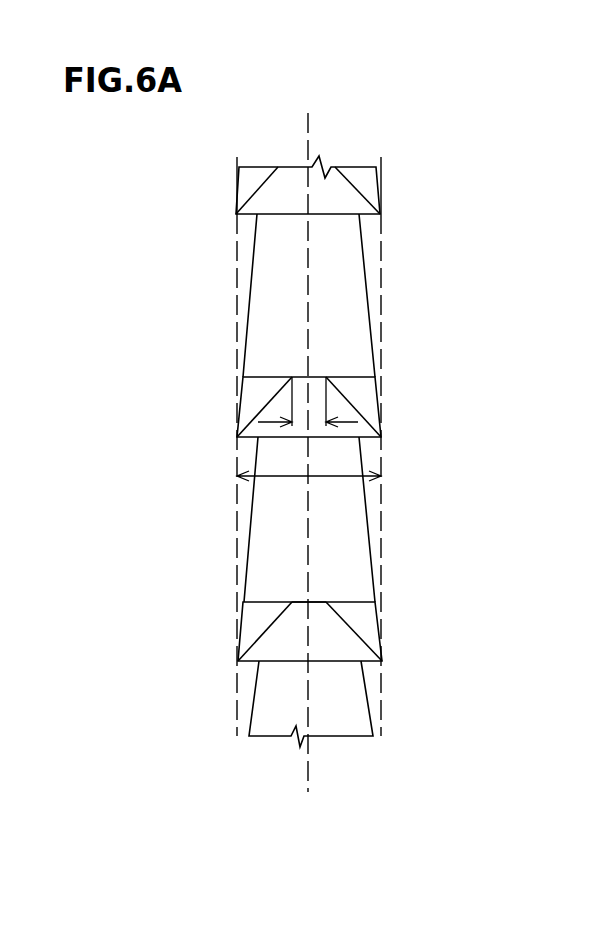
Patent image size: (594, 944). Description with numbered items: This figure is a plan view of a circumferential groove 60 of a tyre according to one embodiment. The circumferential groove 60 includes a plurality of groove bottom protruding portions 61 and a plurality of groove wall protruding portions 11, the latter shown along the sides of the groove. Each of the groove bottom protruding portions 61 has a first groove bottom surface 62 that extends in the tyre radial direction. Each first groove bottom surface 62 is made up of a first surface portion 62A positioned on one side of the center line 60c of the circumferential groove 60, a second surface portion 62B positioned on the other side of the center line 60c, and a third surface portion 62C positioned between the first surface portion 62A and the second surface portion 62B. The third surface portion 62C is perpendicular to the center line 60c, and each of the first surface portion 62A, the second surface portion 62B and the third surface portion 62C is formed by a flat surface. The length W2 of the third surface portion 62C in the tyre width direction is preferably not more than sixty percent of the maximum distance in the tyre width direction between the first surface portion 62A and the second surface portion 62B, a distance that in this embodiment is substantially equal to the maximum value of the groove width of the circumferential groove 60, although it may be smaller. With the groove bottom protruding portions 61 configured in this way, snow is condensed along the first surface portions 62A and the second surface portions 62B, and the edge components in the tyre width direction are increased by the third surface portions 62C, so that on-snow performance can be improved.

The circumferential groove 60 is at (425, 155).
The center line 60c is at (305, 439).
The groove wall protruding portions 11 is at (368, 256).
The groove bottom protruding portions 61 is at (275, 327).
The first groove bottom surface 62 is at (162, 700).
The first surface portion 62A is at (273, 643).
The second surface portion 62B is at (360, 640).
The third surface portion 62C is at (326, 604).
The length of third surface portion W2 is at (310, 422).